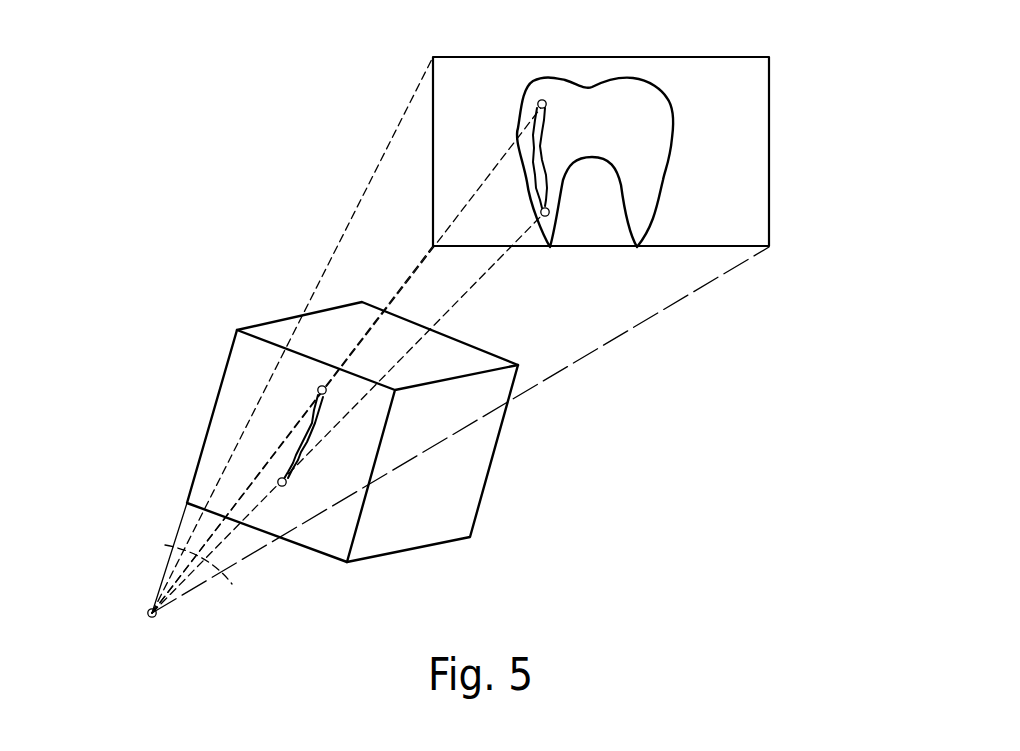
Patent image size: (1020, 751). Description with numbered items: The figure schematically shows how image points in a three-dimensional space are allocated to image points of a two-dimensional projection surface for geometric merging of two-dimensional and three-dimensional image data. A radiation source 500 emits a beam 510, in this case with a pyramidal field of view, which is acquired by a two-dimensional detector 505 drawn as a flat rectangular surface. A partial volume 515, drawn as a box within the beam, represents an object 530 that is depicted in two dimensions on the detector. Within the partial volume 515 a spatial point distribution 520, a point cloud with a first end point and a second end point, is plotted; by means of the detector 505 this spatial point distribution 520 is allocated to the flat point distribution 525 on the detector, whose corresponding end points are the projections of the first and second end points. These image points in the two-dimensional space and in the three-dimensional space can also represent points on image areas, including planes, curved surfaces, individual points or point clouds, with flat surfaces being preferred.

The radiation source 500 is at (147, 629).
The 2D detector 505 is at (769, 108).
The beam 510 is at (165, 545).
The partial volume 515 is at (490, 477).
The spatial point distribution 520 is at (297, 447).
The flat point distribution 525 is at (540, 157).
The object 530 is at (645, 177).